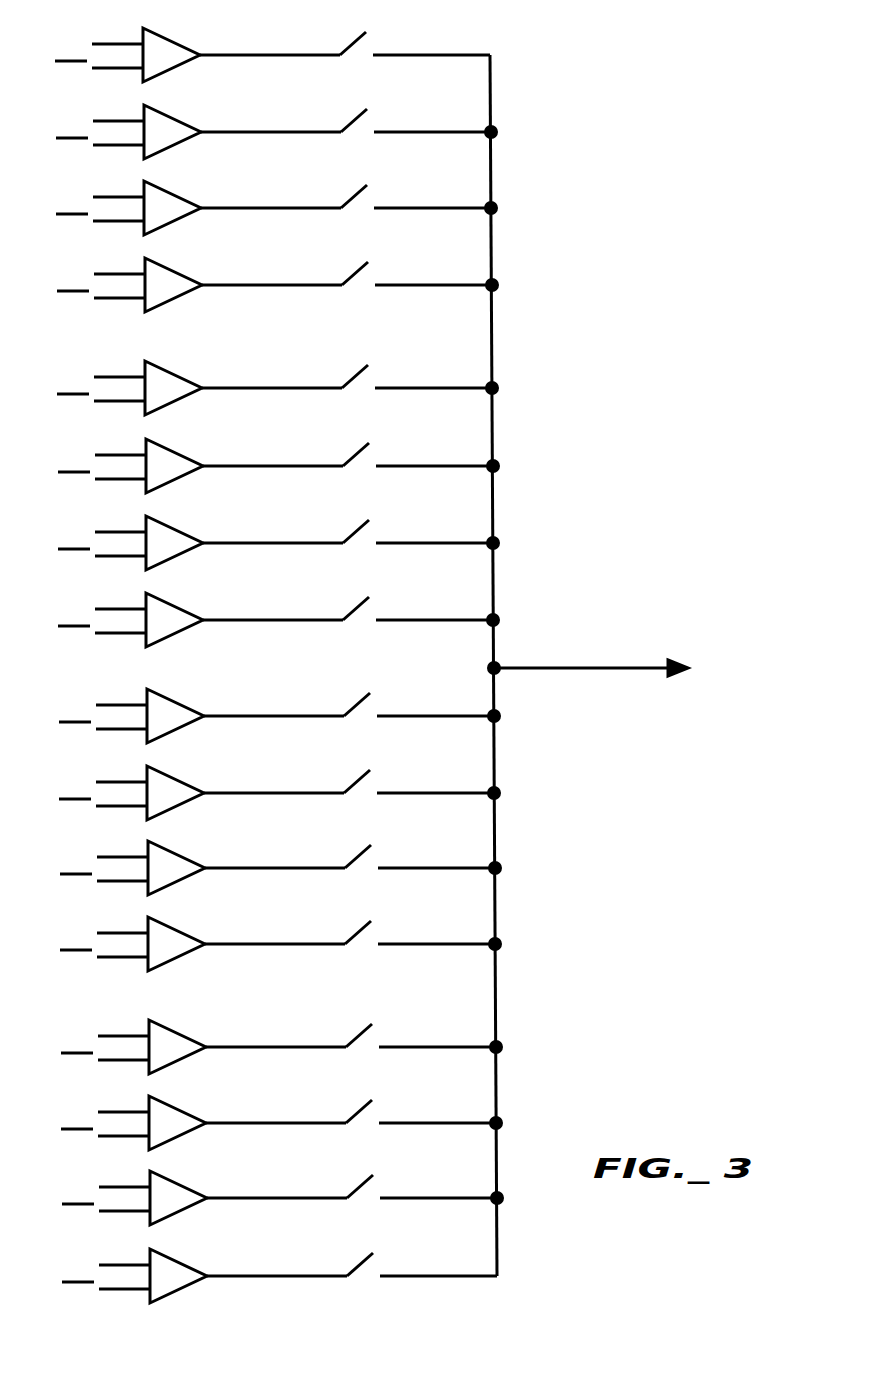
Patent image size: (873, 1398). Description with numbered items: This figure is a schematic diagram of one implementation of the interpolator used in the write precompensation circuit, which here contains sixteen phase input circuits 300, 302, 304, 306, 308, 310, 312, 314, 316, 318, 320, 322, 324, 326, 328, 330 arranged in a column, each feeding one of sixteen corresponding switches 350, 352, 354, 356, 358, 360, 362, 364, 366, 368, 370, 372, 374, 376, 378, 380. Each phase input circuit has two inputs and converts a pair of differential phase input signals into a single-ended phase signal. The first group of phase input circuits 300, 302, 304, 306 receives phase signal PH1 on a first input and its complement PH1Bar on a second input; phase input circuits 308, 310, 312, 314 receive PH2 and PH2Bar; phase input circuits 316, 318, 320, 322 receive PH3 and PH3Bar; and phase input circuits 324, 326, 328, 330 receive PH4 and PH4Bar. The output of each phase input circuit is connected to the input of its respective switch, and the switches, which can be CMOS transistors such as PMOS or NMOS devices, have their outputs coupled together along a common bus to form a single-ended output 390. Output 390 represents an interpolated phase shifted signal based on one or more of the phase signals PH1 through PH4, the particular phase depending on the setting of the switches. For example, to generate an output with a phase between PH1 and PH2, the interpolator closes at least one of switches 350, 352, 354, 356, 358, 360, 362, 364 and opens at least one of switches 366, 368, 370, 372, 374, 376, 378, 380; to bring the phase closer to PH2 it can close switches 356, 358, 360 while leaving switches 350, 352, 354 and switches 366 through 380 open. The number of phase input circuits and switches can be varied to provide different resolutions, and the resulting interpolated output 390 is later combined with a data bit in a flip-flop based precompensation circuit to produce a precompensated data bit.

The phase input circuit 300 is at (197, 45).
The phase input circuit 302 is at (198, 122).
The phase input circuit 304 is at (198, 198).
The phase input circuit 306 is at (199, 275).
The phase input circuit 308 is at (199, 378).
The phase input circuit 310 is at (200, 456).
The phase input circuit 312 is at (200, 533).
The phase input circuit 314 is at (200, 610).
The phase input circuit 316 is at (201, 706).
The phase input circuit 318 is at (201, 783).
The phase input circuit 320 is at (202, 858).
The phase input circuit 322 is at (202, 934).
The phase input circuit 324 is at (203, 1037).
The phase input circuit 326 is at (203, 1113).
The phase input circuit 328 is at (204, 1188).
The phase input circuit 330 is at (204, 1266).
The switch 350 is at (415, 31).
The switch 352 is at (419, 111).
The switch 354 is at (419, 187).
The switch 356 is at (420, 264).
The switch 358 is at (420, 367).
The switch 360 is at (421, 445).
The switch 362 is at (421, 522).
The switch 364 is at (421, 599).
The switch 366 is at (422, 695).
The switch 368 is at (422, 772).
The switch 370 is at (423, 847).
The switch 372 is at (423, 923).
The switch 374 is at (424, 1026).
The switch 376 is at (424, 1102).
The switch 378 is at (425, 1177).
The switch 380 is at (422, 1252).
The single-ended output 390 is at (589, 635).